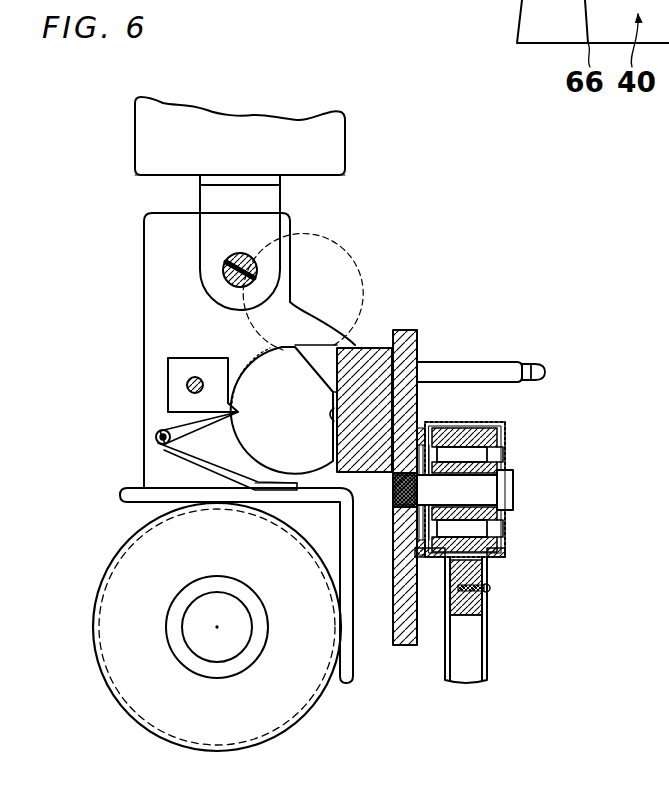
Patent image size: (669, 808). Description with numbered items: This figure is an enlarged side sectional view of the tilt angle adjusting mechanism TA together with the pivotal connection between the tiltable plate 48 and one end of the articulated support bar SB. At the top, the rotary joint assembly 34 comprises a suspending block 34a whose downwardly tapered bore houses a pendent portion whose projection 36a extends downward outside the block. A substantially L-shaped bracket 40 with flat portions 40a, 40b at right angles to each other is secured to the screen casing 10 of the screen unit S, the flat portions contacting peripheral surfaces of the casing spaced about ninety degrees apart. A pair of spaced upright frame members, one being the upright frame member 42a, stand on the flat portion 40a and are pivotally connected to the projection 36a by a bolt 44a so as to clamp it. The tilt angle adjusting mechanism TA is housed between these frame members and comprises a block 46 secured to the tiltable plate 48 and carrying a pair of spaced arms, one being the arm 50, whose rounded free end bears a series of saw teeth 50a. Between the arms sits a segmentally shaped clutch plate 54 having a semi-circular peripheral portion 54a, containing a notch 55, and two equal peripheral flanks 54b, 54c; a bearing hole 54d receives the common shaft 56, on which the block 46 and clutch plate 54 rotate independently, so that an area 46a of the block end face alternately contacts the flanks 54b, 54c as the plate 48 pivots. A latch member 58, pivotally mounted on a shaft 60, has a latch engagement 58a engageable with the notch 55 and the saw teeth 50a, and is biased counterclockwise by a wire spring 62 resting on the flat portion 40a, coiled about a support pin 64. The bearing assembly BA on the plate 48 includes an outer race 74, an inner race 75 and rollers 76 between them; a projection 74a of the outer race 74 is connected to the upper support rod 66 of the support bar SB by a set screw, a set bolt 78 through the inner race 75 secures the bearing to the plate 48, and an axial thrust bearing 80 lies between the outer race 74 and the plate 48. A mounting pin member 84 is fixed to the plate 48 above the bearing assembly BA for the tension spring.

The screen casing 10 is at (130, 722).
The screen unit S is at (227, 717).
The rotary joint assembly 34 is at (328, 126).
The suspending block 34a is at (332, 152).
The projection 36a is at (265, 203).
The bolt 44a is at (222, 267).
The upright frame member 42a is at (275, 305).
The L-shaped bracket 40 is at (121, 501).
The flat portion 40a is at (148, 497).
The flat portion 40b is at (353, 670).
The latch member 58 is at (168, 375).
The latch engagement 58a is at (187, 386).
The shaft 60 is at (218, 358).
The notch 55 is at (240, 363).
The tilt angle adjusting mechanism TA is at (236, 351).
The common shaft 56 is at (238, 413).
The support pin 64 is at (156, 437).
The wire spring 62 is at (223, 489).
The clutch plate 54 is at (290, 462).
The semi-circular peripheral portion 54a is at (236, 448).
The peripheral flank 54b is at (335, 415).
The peripheral flank 54c is at (345, 395).
The bearing hole 54d is at (240, 473).
The arm 50 is at (315, 358).
The saw teeth 50a is at (270, 348).
The block 46 is at (357, 363).
The area of end face 46a is at (470, 372).
The tiltable plate 48 is at (403, 333).
The mounting pin member 84 is at (545, 373).
The axial thrust bearing 80 is at (420, 560).
The bearing assembly BA is at (514, 528).
The outer race 74 is at (508, 424).
The projection 74a is at (470, 607).
The rollers 76 is at (487, 453).
The inner race 75 is at (480, 481).
The set bolt 78 is at (478, 492).
The articulated support bar SB is at (498, 633).
The upper support rod 66 is at (487, 655).